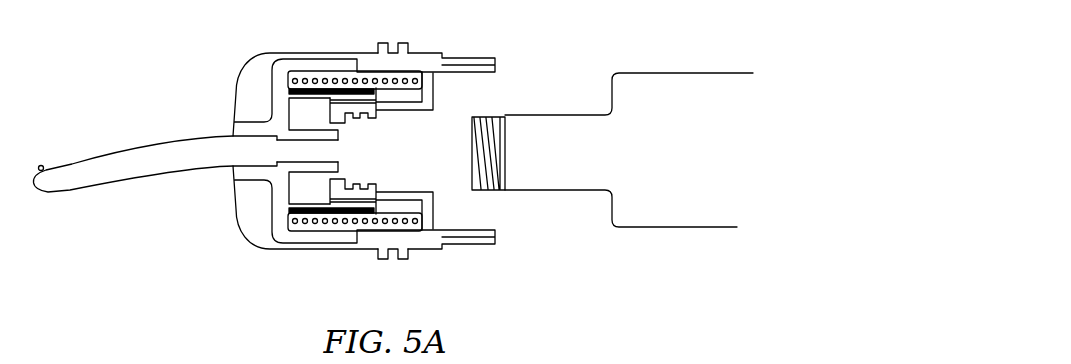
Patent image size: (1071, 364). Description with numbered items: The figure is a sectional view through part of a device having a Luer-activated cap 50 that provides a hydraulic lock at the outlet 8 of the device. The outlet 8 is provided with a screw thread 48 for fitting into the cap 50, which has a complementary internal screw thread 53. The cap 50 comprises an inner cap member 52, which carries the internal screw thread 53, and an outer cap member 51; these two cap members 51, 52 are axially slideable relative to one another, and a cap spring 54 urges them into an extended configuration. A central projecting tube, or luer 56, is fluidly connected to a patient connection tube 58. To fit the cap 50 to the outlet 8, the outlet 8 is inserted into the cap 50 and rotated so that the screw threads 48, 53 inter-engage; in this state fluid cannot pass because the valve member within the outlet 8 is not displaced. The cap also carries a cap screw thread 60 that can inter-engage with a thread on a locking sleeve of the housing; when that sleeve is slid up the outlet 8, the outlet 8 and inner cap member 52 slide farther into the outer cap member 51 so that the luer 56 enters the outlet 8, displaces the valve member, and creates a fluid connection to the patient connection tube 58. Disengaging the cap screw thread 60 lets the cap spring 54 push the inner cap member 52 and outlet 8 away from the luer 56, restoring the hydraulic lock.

The cap 50 is at (309, 170).
The outer cap member 51 is at (247, 207).
The inner cap member 52 is at (418, 108).
The internal screw thread 53 is at (343, 121).
The cap spring 54 is at (300, 78).
The central projecting tube (luer) 56 is at (340, 160).
The patient connection tube 58 is at (128, 154).
The cap screw thread 60 is at (386, 263).
The screw thread 48 is at (488, 203).
The outlet 8 is at (612, 187).